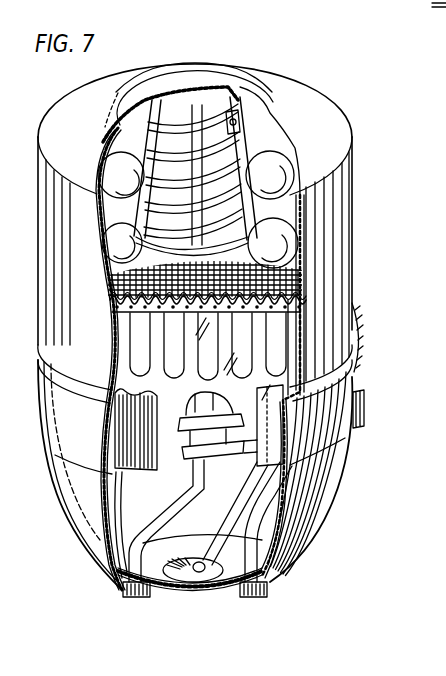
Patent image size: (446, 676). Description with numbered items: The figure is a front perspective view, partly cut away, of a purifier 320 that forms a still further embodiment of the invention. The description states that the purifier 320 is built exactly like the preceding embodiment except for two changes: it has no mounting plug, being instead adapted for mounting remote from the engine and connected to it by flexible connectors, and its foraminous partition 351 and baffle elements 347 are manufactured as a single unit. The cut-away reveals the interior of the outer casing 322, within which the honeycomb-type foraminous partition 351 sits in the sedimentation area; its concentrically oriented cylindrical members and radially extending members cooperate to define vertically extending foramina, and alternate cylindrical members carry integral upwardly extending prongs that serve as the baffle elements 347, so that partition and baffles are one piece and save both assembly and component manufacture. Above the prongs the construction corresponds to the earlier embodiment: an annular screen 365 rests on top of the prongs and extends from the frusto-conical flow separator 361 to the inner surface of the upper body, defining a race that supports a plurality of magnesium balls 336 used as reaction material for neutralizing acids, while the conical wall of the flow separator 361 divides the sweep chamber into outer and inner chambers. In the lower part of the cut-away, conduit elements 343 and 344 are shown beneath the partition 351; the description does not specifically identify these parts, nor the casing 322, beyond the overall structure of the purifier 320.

The purifier 320 is at (225, 362).
The cylindrical casing 322 is at (232, 245).
The spherical support member 336 is at (97, 162).
The conduit tube 343 is at (271, 529).
The conduit tube 344 is at (177, 521).
The baffle elements 347 is at (183, 350).
The foraminous partition 351 is at (108, 429).
The inner cup member 361 is at (216, 133).
The mesh screen 365 is at (185, 280).